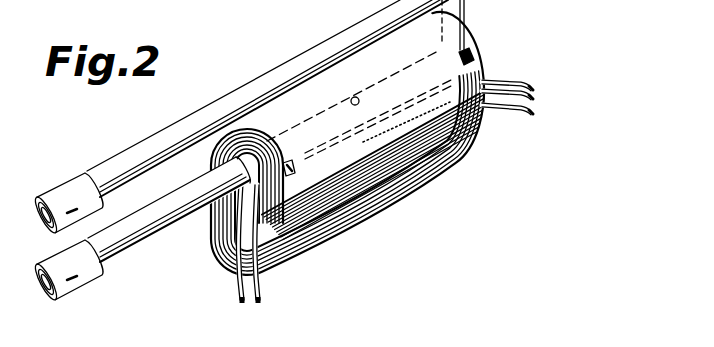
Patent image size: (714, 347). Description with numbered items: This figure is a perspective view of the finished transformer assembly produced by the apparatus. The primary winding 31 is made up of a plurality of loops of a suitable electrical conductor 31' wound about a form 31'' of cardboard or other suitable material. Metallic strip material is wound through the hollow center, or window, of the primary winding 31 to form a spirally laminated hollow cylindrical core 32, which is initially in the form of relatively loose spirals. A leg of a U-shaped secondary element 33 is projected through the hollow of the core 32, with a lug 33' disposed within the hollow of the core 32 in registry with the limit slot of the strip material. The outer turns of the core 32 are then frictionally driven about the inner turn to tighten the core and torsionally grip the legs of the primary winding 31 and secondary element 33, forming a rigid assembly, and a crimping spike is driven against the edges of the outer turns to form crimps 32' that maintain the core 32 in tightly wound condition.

The primary winding 31 is at (349, 175).
The electrical conductor 31' is at (283, 243).
The form 31'' is at (323, 244).
The spirally laminated hollow cylindrical core 32 is at (476, 25).
The crimps 32' is at (401, 108).
The U-shaped secondary element 33 is at (243, 151).
The lug 33' is at (369, 81).